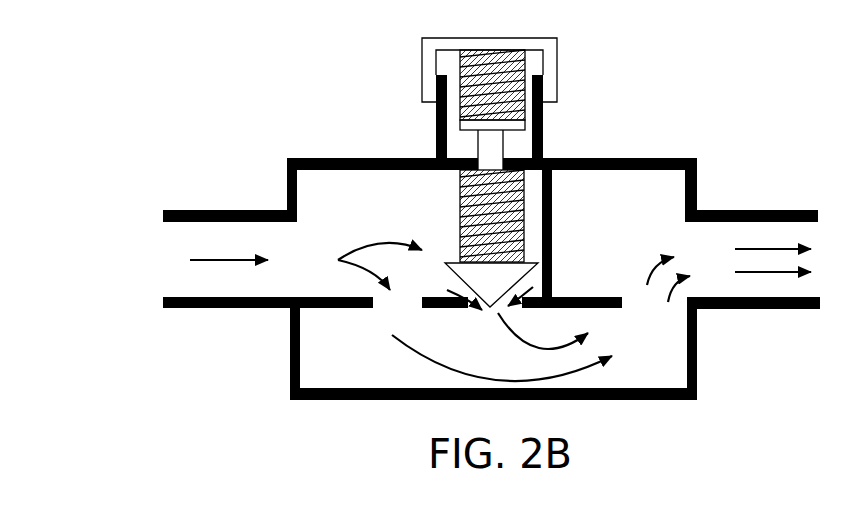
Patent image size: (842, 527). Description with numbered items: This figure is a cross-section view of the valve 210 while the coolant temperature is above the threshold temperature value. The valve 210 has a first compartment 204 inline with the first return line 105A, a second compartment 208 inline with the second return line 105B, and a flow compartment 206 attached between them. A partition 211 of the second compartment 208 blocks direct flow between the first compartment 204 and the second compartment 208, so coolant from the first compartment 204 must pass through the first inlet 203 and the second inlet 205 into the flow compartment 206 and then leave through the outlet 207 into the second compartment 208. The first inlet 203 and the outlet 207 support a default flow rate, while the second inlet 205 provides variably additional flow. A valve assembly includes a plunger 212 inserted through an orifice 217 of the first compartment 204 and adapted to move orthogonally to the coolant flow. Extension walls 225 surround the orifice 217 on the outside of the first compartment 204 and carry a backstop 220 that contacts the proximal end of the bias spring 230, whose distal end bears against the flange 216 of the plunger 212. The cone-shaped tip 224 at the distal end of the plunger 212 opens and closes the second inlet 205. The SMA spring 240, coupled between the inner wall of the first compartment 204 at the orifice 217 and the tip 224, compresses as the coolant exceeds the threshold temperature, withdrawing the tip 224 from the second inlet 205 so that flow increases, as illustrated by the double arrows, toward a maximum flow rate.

The valve 210 is at (285, 74).
The backstop 220 is at (557, 55).
The extension walls 225 is at (433, 110).
The bias spring 230 is at (523, 53).
The flange 216 is at (525, 128).
The plunger 212 is at (493, 152).
The orifice 217 is at (502, 155).
The SMA spring 240 is at (463, 188).
The second inlet 205 is at (477, 320).
The partition 211 is at (553, 252).
The tip 224 is at (527, 278).
The first inlet 203 is at (388, 314).
The first return line 105A is at (167, 209).
The first compartment 204 is at (330, 191).
The flow compartment 206 is at (330, 342).
The second compartment 208 is at (639, 188).
The outlet 207 is at (660, 316).
The second return line 105B is at (780, 311).